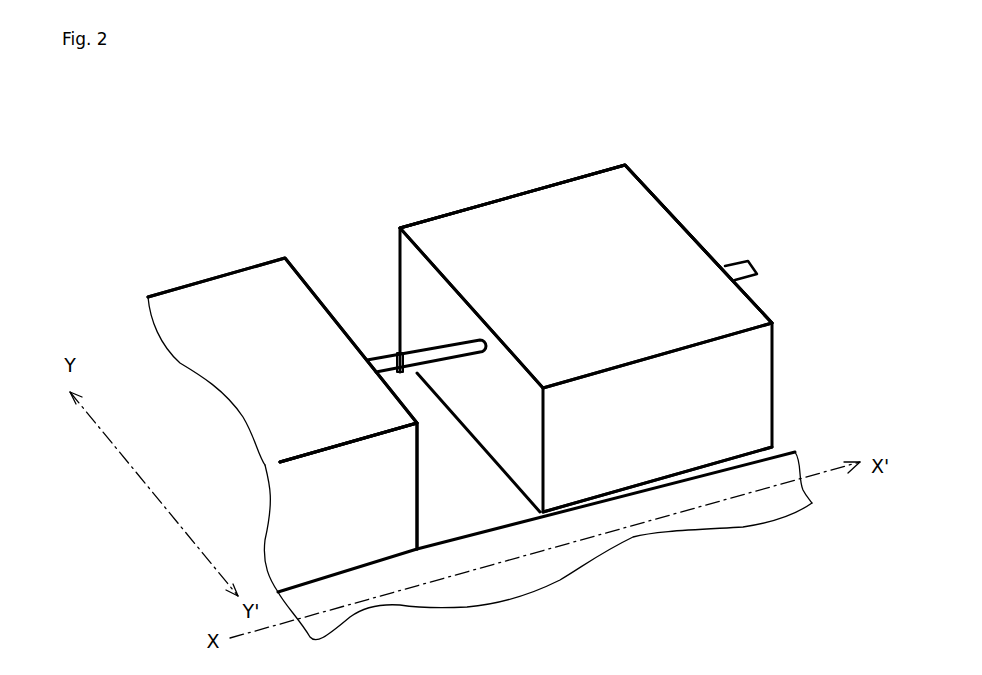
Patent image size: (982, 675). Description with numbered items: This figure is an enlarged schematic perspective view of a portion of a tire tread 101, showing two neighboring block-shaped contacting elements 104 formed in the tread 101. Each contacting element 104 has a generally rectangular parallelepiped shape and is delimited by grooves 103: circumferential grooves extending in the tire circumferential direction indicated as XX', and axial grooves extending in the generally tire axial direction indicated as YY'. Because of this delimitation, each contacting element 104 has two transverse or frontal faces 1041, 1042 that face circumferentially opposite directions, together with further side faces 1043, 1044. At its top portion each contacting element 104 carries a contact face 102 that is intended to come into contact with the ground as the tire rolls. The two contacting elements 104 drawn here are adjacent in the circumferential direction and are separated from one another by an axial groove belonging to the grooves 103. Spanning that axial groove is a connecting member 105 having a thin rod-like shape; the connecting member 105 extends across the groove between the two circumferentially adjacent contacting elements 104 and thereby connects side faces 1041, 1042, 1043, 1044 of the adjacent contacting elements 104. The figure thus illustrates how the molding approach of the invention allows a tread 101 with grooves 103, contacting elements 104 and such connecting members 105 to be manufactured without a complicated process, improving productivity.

The tread 101 is at (393, 190).
The contact face 102 is at (256, 340).
The groove 103 is at (372, 343).
The contacting element 104 is at (166, 297).
The connecting member 105 is at (397, 370).
The transverse face 1041 is at (512, 440).
The transverse face 1042 is at (420, 475).
The side face 1043 is at (660, 428).
The side face 1044 is at (600, 168).